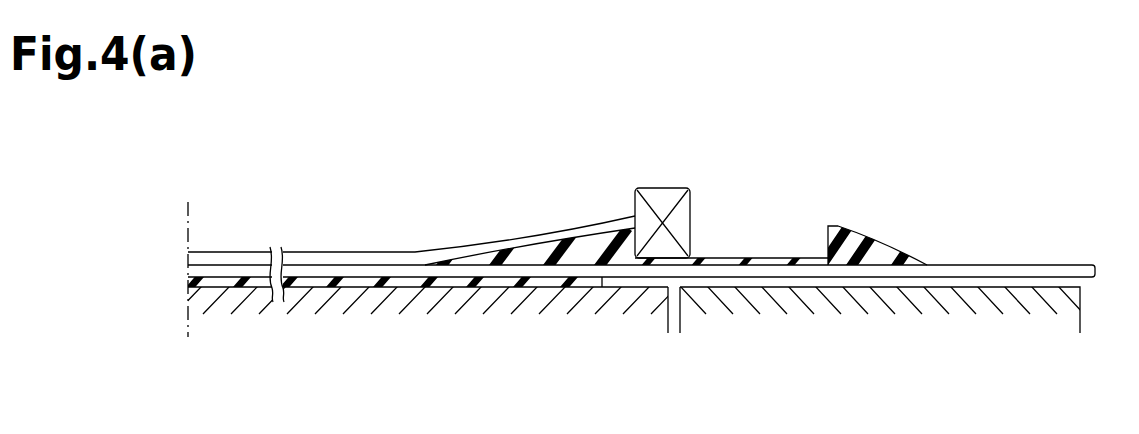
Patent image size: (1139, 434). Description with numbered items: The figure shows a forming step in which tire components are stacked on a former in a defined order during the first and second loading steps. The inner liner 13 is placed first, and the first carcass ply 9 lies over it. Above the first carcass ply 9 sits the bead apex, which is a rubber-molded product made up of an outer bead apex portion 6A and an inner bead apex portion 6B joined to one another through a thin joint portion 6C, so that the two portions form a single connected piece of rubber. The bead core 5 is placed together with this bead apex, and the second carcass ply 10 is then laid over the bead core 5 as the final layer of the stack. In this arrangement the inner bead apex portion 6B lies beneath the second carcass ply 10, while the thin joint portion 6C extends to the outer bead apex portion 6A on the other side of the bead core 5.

The bead core 5 is at (657, 188).
The outer bead apex portion 6A is at (855, 228).
The inner bead apex portion 6B is at (548, 242).
The thin joint portion 6C is at (780, 258).
The first carcass ply 9 is at (1000, 264).
The second carcass ply 10 is at (462, 244).
The inner liner 13 is at (542, 288).